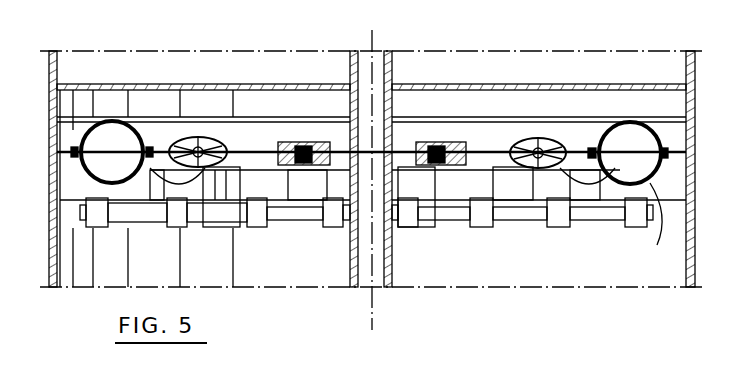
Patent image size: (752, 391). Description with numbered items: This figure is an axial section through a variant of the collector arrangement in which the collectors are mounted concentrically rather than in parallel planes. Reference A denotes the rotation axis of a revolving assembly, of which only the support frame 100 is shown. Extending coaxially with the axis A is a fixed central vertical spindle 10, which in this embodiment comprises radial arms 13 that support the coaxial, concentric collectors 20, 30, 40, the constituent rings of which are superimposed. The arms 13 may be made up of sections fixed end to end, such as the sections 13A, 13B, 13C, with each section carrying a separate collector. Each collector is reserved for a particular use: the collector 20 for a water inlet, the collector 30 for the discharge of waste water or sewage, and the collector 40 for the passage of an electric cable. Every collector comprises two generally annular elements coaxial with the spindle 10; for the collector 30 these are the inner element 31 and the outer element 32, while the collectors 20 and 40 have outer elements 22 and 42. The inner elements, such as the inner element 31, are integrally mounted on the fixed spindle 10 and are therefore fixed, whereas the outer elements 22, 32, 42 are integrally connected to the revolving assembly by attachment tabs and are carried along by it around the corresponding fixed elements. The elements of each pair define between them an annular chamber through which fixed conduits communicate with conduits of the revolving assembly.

The fixed central spindle 10 is at (348, 247).
The radial arms 13 is at (230, 229).
The arm section 13A is at (428, 226).
The arm section 13B is at (516, 219).
The arm section 13C is at (592, 220).
The collector 20 is at (206, 138).
The outer element 22 is at (538, 138).
The collector 30 is at (152, 121).
The inner element 31 is at (654, 229).
The outer element 32 is at (633, 122).
The collector 40 is at (296, 140).
The outer element 42 is at (427, 140).
The support frame 100 is at (57, 72).
The rotation axis A is at (373, 290).